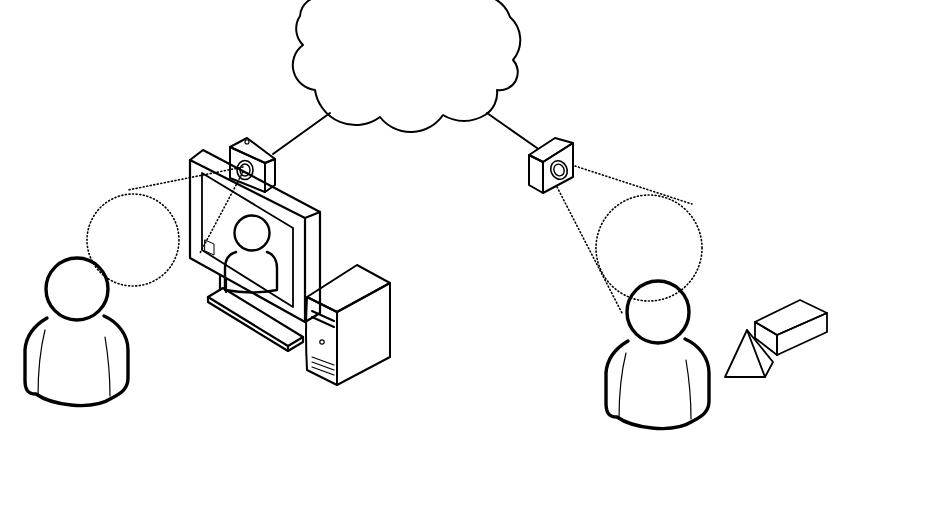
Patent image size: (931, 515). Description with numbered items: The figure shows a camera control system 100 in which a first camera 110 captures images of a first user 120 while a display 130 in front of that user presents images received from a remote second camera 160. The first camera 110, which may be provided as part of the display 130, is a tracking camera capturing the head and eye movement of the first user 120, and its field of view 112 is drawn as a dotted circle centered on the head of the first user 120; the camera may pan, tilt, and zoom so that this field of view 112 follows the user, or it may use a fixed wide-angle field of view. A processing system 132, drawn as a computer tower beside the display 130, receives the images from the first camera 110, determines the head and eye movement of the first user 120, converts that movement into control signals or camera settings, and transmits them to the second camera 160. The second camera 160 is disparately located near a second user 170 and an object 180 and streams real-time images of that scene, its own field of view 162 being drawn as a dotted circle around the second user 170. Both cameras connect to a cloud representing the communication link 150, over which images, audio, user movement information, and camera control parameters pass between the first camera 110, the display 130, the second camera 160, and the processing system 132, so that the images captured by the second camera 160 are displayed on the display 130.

The camera control system 100 is at (442, 500).
The first camera 110 is at (242, 138).
The field of view 112 is at (105, 198).
The first user 120 is at (120, 361).
The display 130 is at (200, 152).
The processing system 132 is at (373, 281).
The communication link 150 is at (422, 78).
The second camera 160 is at (562, 137).
The field of view 162 is at (690, 202).
The second user 170 is at (615, 383).
The object 180 is at (788, 317).